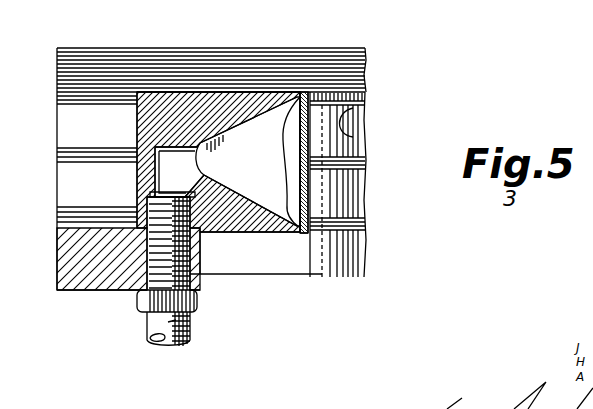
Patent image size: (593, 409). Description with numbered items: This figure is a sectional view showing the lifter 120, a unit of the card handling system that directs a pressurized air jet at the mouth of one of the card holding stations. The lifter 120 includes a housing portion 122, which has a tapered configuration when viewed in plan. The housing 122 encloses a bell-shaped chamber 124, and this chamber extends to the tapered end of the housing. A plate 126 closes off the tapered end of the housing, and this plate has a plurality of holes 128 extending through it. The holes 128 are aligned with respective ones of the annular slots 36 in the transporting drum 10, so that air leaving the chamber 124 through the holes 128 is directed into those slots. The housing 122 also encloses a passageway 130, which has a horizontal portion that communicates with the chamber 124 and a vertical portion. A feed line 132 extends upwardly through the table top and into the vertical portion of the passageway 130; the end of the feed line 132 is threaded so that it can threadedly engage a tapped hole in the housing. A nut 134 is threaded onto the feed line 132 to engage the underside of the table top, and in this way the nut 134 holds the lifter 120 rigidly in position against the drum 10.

The transporting drum 10 is at (303, 47).
The annular slots 36 is at (362, 127).
The lifter 120 is at (248, 230).
The housing portion 122 is at (198, 110).
The bell-shaped chamber 124 is at (254, 168).
The plate 126 is at (308, 194).
The holes 128 is at (300, 99).
The passageway 130 is at (165, 165).
The feed line 132 is at (165, 323).
The nut 134 is at (142, 302).